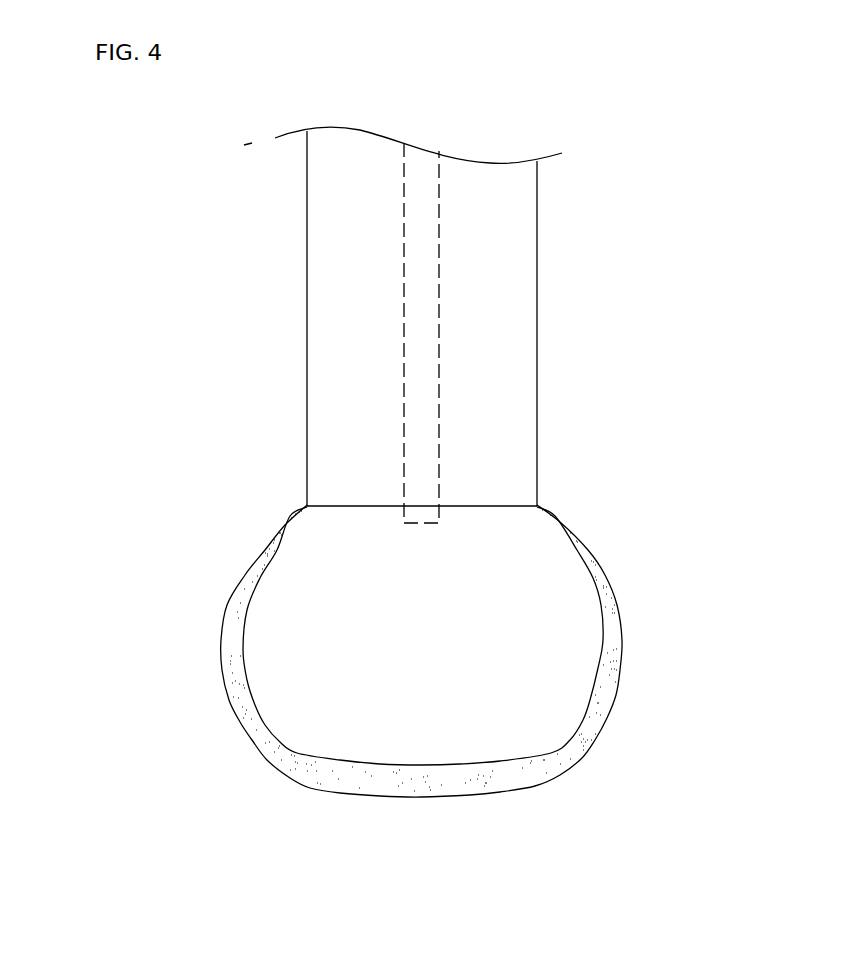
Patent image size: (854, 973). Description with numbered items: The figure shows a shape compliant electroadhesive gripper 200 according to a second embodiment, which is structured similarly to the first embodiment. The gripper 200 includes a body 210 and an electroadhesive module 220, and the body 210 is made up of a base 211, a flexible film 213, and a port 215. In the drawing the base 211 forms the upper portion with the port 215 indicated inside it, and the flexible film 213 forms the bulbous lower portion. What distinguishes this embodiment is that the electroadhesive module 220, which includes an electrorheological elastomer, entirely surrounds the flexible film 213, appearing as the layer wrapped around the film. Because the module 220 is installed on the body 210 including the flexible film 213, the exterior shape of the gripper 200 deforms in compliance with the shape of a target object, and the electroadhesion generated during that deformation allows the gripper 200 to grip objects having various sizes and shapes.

The shape compliant electroadhesive gripper 200 is at (612, 213).
The body 210 is at (697, 305).
The base 211 is at (537, 304).
The port 215 is at (440, 398).
The flexible film 213 is at (562, 625).
The electroadhesive module 220 is at (470, 780).